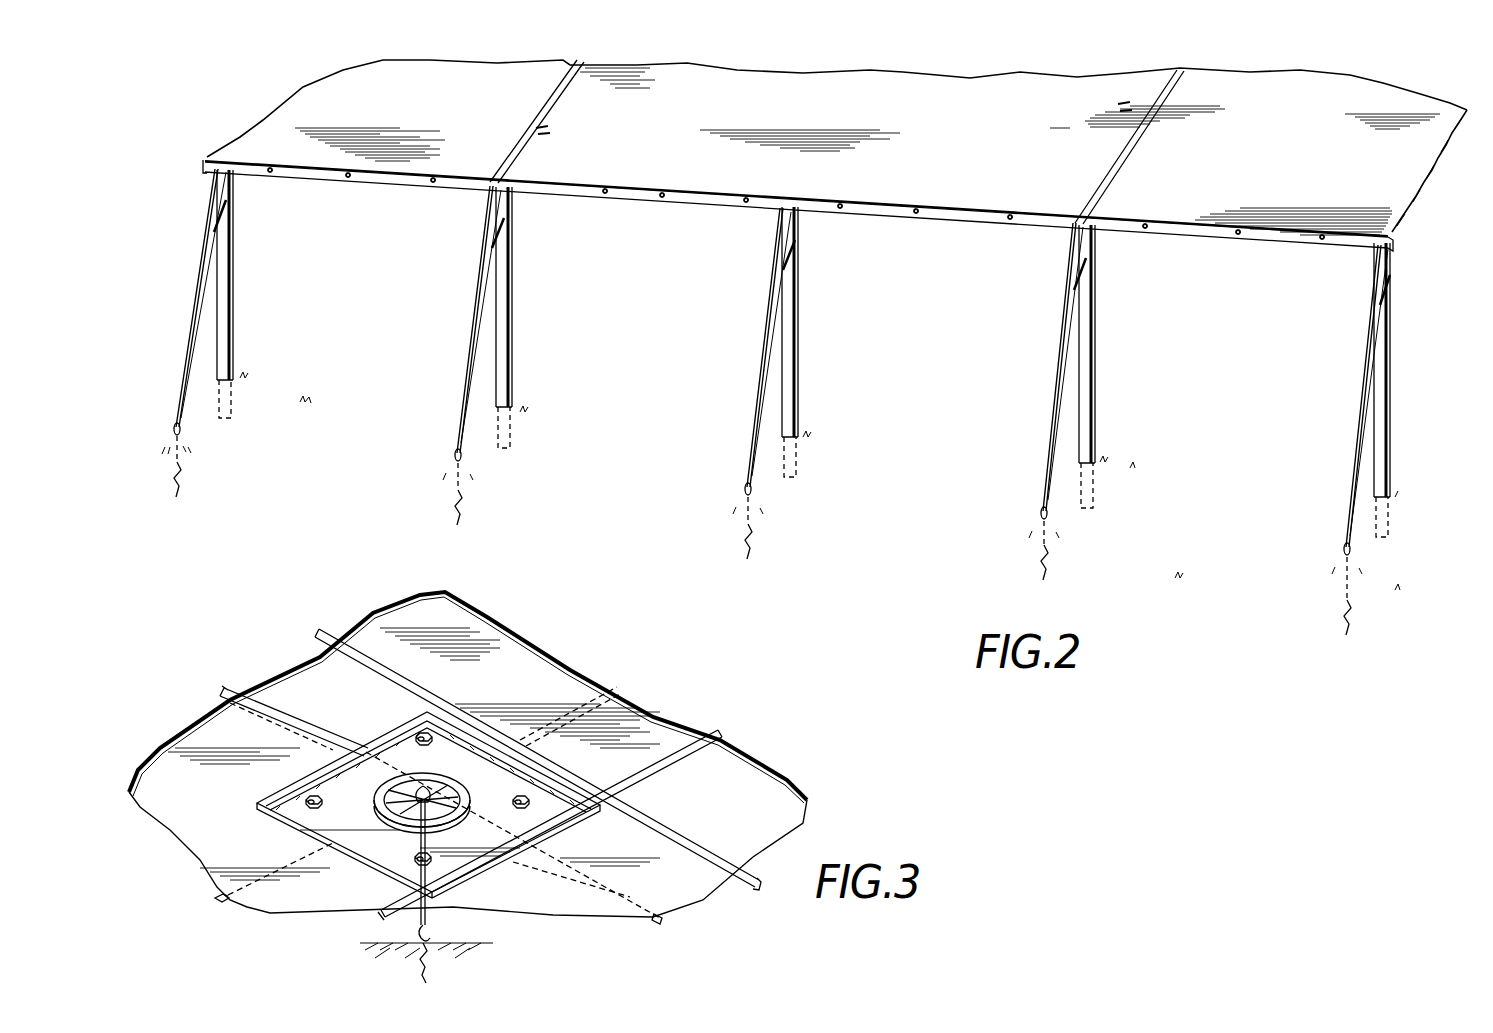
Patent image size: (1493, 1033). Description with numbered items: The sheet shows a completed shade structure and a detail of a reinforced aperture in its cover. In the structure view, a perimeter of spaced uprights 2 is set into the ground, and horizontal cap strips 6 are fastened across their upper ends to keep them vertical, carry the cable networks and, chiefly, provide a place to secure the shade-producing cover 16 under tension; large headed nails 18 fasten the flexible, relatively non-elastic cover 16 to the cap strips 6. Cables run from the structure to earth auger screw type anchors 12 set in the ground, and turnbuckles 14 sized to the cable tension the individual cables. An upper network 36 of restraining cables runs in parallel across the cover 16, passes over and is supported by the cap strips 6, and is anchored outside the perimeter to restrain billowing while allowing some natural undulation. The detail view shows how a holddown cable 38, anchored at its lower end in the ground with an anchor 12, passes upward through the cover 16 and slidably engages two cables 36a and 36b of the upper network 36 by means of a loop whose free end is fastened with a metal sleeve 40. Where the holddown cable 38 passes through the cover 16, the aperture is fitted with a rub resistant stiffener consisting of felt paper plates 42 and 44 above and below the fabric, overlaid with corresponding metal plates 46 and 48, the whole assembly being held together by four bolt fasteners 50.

In FIG. 2, the uprights 2 is at (235, 288).
In FIG. 2, the cap strips 6 is at (304, 172).
In FIG. 2, the anchors 12 is at (175, 487).
In FIG. 3, the anchors 12 is at (430, 965).
In FIG. 2, the turnbuckles 14 is at (174, 428).
In FIG. 2, the cover 16 is at (318, 106).
In FIG. 3, the cover 16 is at (784, 766).
In FIG. 2, the large headed nails 18 is at (268, 172).
In FIG. 3, the upper network 36 is at (226, 684).
In FIG. 3, the cable 36a is at (617, 690).
In FIG. 3, the cable 36b is at (666, 918).
In FIG. 3, the holddown cable 38 is at (403, 885).
In FIG. 3, the metal sleeve 40 is at (435, 817).
In FIG. 3, the felt paper plate 42 is at (402, 782).
In FIG. 3, the felt paper plate 44 is at (260, 808).
In FIG. 3, the metal plate 46 is at (340, 745).
In FIG. 3, the metal plate 48 is at (290, 812).
In FIG. 3, the bolt fasteners 50 is at (313, 798).